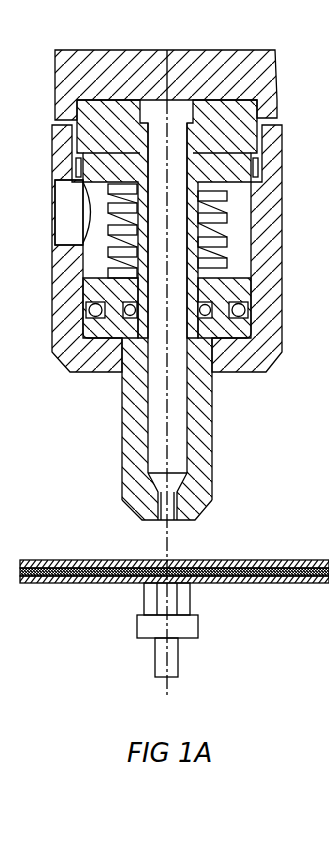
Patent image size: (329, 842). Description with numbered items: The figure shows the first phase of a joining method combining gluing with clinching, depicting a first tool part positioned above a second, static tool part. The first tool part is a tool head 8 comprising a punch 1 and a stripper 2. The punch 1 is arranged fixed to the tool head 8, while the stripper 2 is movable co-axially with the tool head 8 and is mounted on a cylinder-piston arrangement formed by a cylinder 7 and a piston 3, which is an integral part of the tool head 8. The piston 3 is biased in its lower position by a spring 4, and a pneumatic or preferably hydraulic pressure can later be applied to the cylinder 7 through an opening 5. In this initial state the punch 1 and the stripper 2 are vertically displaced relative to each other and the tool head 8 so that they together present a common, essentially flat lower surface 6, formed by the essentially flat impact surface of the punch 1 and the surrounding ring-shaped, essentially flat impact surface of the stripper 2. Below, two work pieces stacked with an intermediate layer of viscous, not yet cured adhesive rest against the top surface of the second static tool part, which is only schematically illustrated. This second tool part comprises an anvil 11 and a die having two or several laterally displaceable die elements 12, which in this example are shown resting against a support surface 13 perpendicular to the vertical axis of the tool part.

The punch 1 is at (177, 440).
The stripper 2 is at (132, 482).
The piston 3 is at (92, 288).
The spring 4 is at (220, 220).
The opening 5 is at (62, 208).
The lower surface 6 is at (177, 520).
The cylinder 7 is at (238, 265).
The tool head 8 is at (277, 157).
The anvil 11 is at (163, 602).
The die elements 12 is at (185, 600).
The support surface 13 is at (195, 610).